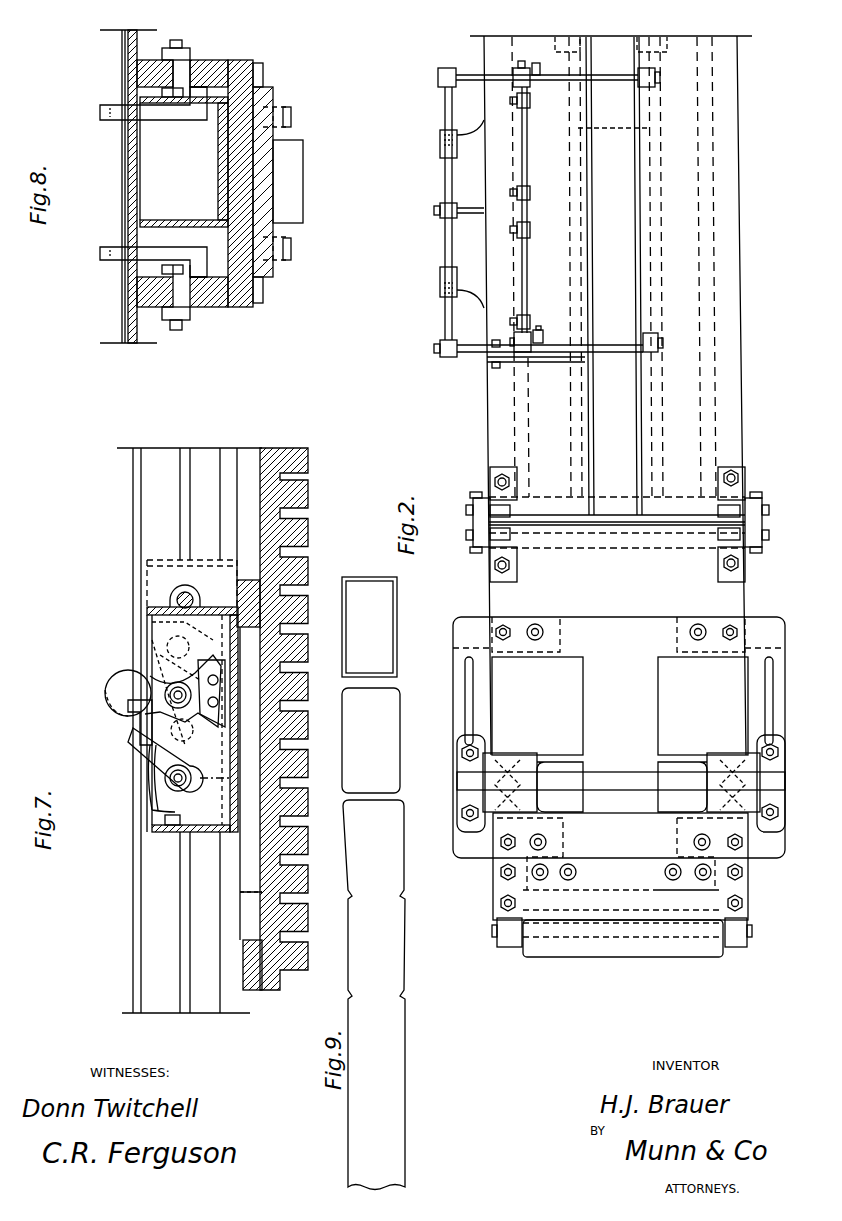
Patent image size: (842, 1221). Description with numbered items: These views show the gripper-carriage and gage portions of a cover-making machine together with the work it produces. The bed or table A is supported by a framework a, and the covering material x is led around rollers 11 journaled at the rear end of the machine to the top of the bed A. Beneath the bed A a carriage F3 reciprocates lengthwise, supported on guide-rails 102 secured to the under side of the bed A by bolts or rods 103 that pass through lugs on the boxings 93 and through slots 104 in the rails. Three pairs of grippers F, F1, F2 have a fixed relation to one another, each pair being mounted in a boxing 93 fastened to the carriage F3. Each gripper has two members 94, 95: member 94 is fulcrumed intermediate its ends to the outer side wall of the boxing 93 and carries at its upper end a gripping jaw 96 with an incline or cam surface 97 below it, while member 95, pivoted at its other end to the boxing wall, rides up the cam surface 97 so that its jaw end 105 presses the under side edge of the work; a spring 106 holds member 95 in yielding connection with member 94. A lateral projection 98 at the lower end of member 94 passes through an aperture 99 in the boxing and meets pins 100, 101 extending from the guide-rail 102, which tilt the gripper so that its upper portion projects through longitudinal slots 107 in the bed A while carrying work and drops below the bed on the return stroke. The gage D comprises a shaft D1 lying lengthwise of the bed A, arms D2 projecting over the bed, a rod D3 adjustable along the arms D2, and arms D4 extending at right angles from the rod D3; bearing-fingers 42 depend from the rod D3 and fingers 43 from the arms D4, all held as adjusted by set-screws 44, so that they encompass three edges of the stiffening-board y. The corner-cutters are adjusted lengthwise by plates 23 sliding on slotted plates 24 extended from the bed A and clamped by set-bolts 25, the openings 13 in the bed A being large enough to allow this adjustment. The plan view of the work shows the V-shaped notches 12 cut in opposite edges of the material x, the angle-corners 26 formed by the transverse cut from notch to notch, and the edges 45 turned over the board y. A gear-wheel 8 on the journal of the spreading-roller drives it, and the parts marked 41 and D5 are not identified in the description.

In FIG. 2, the rollers 11 is at (615, 958).
In FIG. 9, the notches 12 is at (346, 893).
In FIG. 2, the openings 13 is at (620, 734).
In FIG. 2, the lateral extensions or plates 23 is at (457, 760).
In FIG. 2, the longitudinally-slotted plates 24 is at (455, 690).
In FIG. 2, the set-bolts 25 is at (457, 790).
In FIG. 9, the angle-corners 26 is at (342, 791).
In FIG. 2, the pipe fitting 41 is at (507, 205).
In FIG. 2, the bearing-fingers 42 is at (531, 192).
In FIG. 2, the fingers 43 is at (660, 345).
In FIG. 2, the set-screws 44 is at (590, 78).
In FIG. 9, the turned-over edges 45 is at (368, 590).
In FIG. 8, the boxing 93 is at (196, 143).
In FIG. 7, the boxing 93 is at (202, 833).
In FIG. 8, the gripper member 94 is at (106, 112).
In FIG. 7, the gripper member 94 is at (128, 676).
In FIG. 7, the gripper member 95 is at (140, 745).
In FIG. 7, the gripping surface or jaw 96 is at (112, 702).
In FIG. 7, the incline or cam surface 97 is at (142, 683).
In FIG. 8, the lateral projection 98 is at (205, 268).
In FIG. 8, the aperture 99 is at (226, 265).
In FIG. 7, the aperture 99 is at (205, 722).
In FIG. 7, the pin 100 is at (251, 727).
In FIG. 8, the pin 101 is at (202, 96).
In FIG. 7, the pin 101 is at (220, 690).
In FIG. 8, the guide-rail 102 is at (172, 306).
In FIG. 7, the guide-rail 102 is at (200, 448).
In FIG. 8, the bolts or rods 103 is at (185, 330).
In FIG. 7, the bolts or rods 103 is at (189, 592).
In FIG. 7, the slots 104 is at (180, 540).
In FIG. 7, the gripper or jaw end 105 is at (128, 725).
In FIG. 7, the spring 106 is at (152, 806).
In FIG. 8, the longitudinal slots 107 is at (122, 108).
In FIG. 7, the longitudinal slots 107 is at (133, 525).
In FIG. 7, the gear-wheel 8 is at (147, 620).
In FIG. 7, the bed or table A is at (147, 565).
In FIG. 7, the pair of grippers F is at (192, 719).
In FIG. 2, the pair of grippers F1 is at (595, 140).
In FIG. 8, the pair of grippers F2 is at (125, 203).
In FIG. 8, the carriage F3 is at (245, 183).
In FIG. 2, the gage D is at (540, 380).
In FIG. 2, the shaft D1 is at (442, 165).
In FIG. 2, the arms D2 is at (455, 78).
In FIG. 2, the rod D3 is at (528, 280).
In FIG. 2, the arms D4 is at (600, 345).
In FIG. 2, the pipe D5 is at (535, 360).
In FIG. 8, the framework a is at (303, 180).
In FIG. 7, the framework a is at (300, 478).
In FIG. 9, the material x is at (375, 912).
In FIG. 9, the stiffening-board y is at (373, 640).